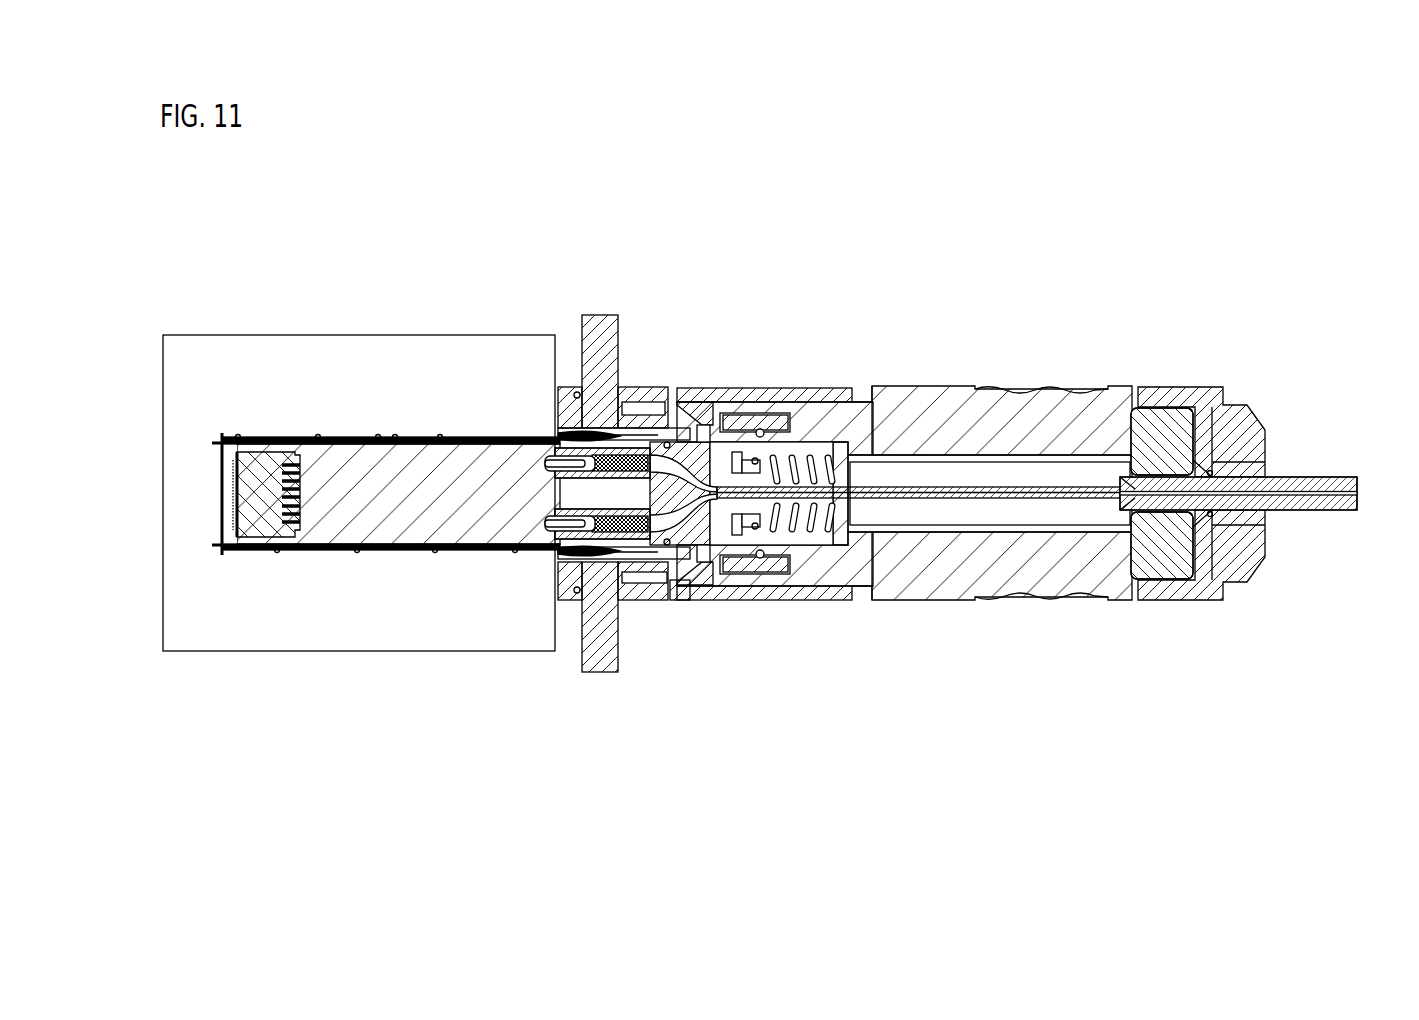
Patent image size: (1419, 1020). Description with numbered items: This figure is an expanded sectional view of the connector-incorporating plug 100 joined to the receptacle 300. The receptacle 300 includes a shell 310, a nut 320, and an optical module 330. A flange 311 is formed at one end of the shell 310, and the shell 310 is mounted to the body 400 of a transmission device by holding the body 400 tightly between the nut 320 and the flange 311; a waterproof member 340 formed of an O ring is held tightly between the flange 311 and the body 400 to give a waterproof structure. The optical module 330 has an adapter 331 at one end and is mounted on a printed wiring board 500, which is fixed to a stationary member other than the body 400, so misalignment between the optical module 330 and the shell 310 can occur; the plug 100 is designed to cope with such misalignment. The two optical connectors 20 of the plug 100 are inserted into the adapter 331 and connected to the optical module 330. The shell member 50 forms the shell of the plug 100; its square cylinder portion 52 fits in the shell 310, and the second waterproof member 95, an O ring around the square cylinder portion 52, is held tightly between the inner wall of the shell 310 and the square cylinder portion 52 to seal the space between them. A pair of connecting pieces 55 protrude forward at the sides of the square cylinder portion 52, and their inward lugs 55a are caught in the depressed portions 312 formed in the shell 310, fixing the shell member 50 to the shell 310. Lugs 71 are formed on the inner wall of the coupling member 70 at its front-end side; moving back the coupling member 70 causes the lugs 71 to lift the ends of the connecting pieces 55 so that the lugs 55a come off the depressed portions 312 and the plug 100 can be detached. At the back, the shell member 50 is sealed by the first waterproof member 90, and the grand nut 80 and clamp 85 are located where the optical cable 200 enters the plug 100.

The optical connector 20 is at (560, 538).
The shell member 50 is at (1035, 601).
The square cylinder portion 52 is at (834, 450).
The connecting piece 55 is at (768, 575).
The lug 55a is at (724, 557).
The coupling member 70 is at (835, 601).
The lug 71 is at (685, 600).
The grand nut 80 is at (1250, 407).
The clamp 85 is at (1212, 557).
The first waterproof member 90 is at (1160, 582).
The second waterproof member 95 is at (761, 429).
The connector-incorporating plug 100 is at (1115, 386).
The optical cable 200 is at (1316, 477).
The receptacle 300 is at (648, 601).
The shell 310 is at (790, 445).
The flange 311 is at (566, 388).
The depressed portion 312 is at (707, 415).
The nut 320 is at (641, 387).
The optical module 330 is at (405, 437).
The adapter 331 is at (637, 440).
The waterproof member 340 is at (590, 601).
The body 400 is at (601, 315).
The printed wiring board 500 is at (220, 335).